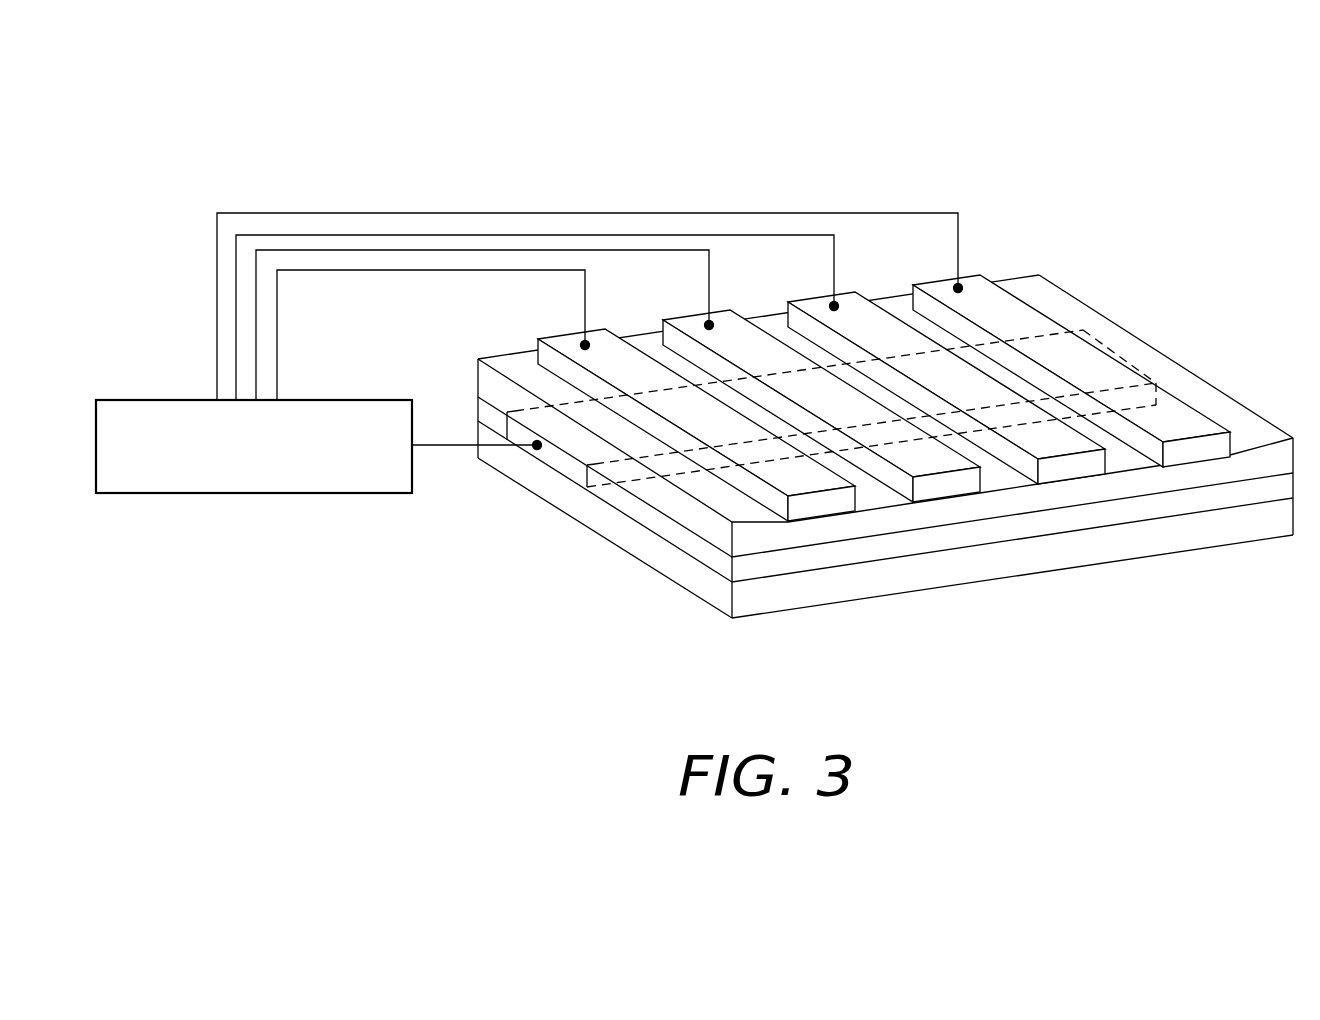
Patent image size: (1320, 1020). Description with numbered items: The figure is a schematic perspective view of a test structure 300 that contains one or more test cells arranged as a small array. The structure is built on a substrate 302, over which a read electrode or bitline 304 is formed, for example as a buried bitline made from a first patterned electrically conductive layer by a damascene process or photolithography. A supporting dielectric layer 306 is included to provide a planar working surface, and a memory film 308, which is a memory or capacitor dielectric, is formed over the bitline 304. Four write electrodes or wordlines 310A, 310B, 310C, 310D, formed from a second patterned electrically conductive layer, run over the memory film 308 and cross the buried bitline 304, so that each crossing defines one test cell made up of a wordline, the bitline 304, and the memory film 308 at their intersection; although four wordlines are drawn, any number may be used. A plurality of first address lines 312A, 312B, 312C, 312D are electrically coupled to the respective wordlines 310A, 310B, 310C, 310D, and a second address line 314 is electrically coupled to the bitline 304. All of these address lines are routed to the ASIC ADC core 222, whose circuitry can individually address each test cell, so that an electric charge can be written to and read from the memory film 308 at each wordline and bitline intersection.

The test structure 300 is at (387, 120).
The ASIC ADC core 222 is at (257, 494).
The substrate 302 is at (685, 573).
The bitline 304 is at (562, 467).
The supporting dielectric layer 306 is at (630, 505).
The memory film 308 is at (762, 537).
The wordline 310A is at (823, 505).
The wordline 310B is at (950, 483).
The wordline 310C is at (1077, 468).
The wordline 310D is at (1197, 450).
The first address line 312A is at (353, 272).
The first address line 312B is at (440, 252).
The first address line 312C is at (528, 233).
The first address line 312D is at (673, 212).
The second address line 314 is at (437, 451).